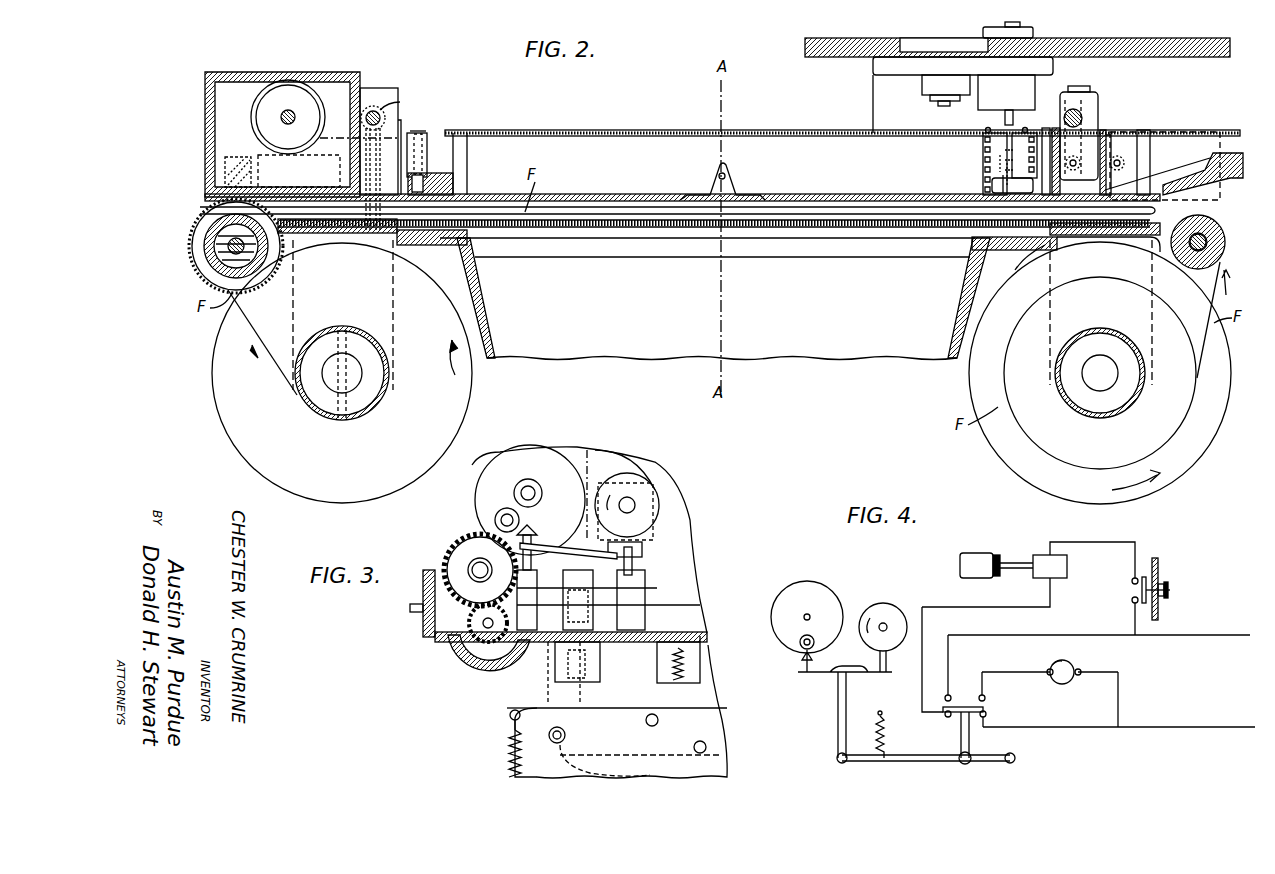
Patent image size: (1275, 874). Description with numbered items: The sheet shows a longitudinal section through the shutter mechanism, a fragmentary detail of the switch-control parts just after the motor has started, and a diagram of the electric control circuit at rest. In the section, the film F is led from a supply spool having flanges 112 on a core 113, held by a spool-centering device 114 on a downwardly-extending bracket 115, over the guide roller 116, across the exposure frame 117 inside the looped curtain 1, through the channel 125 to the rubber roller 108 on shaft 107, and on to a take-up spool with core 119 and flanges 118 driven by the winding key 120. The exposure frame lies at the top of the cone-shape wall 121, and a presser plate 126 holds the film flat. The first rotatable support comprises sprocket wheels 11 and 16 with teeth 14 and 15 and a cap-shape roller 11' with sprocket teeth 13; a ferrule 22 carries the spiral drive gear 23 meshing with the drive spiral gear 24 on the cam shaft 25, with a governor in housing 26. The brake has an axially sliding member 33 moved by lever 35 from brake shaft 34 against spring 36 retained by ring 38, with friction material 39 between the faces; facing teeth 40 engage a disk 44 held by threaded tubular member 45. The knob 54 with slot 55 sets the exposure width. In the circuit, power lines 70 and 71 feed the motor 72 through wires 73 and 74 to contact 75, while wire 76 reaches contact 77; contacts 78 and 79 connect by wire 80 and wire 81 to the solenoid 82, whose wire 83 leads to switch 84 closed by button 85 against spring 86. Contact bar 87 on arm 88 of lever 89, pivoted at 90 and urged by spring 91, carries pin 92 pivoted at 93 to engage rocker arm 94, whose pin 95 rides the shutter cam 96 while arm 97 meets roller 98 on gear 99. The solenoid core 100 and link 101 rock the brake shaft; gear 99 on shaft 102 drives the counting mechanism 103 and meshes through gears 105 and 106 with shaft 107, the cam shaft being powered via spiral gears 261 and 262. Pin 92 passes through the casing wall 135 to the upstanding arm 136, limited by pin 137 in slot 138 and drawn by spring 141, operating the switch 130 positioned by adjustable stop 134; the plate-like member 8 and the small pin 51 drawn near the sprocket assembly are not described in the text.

In FIG. 2, the curtain 1 is at (650, 132).
In FIG. 2, the platen plate 8 is at (425, 142).
In FIG. 2, the sprocket wheel 11 is at (958, 164).
In FIG. 2, the cap-shape roller 11' is at (479, 164).
In FIG. 2, the sprocket teeth 13 is at (420, 131).
In FIG. 2, the teeth 14 is at (1005, 163).
In FIG. 2, the teeth 15 is at (1025, 133).
In FIG. 2, the sprocket wheel 16 is at (1007, 167).
In FIG. 2, the ferrule 22 is at (402, 138).
In FIG. 2, the spiral drive gear 23 is at (362, 122).
In FIG. 2, the drive spiral gear 24 is at (385, 113).
In FIG. 2, the cam shaft 25 is at (373, 110).
In FIG. 3, the cam shaft 25 is at (632, 505).
In FIG. 4, the cam shaft 25 is at (884, 623).
In FIG. 2, the housing 26 is at (358, 143).
In FIG. 2, the axially sliding member 33 is at (1110, 134).
In FIG. 2, the brake shaft 34 is at (1083, 122).
In FIG. 2, the lever 35 is at (1103, 134).
In FIG. 2, the spring 36 is at (1140, 156).
In FIG. 2, the ring 38 is at (1150, 134).
In FIG. 2, the friction material 39 is at (1048, 127).
In FIG. 2, the facing teeth 40 is at (985, 130).
In FIG. 2, the disk 44 is at (1003, 175).
In FIG. 2, the threaded tubular member 45 is at (1000, 156).
In FIG. 2, the pin 51 is at (1023, 130).
In FIG. 2, the knob 54 is at (983, 32).
In FIG. 2, the slot 55 is at (1009, 26).
In FIG. 4, the source of power 70 is at (1217, 635).
In FIG. 4, the source of power 71 is at (1221, 727).
In FIG. 4, the motor 72 is at (1073, 666).
In FIG. 4, the wire 73 is at (1118, 695).
In FIG. 4, the wire 74 is at (1013, 672).
In FIG. 4, the switch contact 75 is at (988, 700).
In FIG. 4, the wire 76 is at (1017, 635).
In FIG. 4, the switch contact 77 is at (950, 695).
In FIG. 4, the switch contact 78 is at (943, 716).
In FIG. 4, the switch contact 79 is at (983, 711).
In FIG. 4, the wire 80 is at (1095, 728).
In FIG. 4, the wire 81 is at (988, 605).
In FIG. 2, the solenoid 82 is at (1216, 154).
In FIG. 4, the solenoid 82 is at (1067, 565).
In FIG. 4, the wire 83 is at (1120, 543).
In FIG. 4, the switch 84 is at (1130, 585).
In FIG. 4, the button 85 is at (1172, 590).
In FIG. 4, the spring 86 is at (1160, 583).
In FIG. 4, the contact bar 87 is at (986, 720).
In FIG. 4, the arm 88 is at (963, 738).
In FIG. 4, the lever 89 is at (905, 762).
In FIG. 4, the pivot 90 is at (1015, 760).
In FIG. 4, the spring 91 is at (876, 730).
In FIG. 3, the pin 92 is at (565, 570).
In FIG. 4, the pin 92 is at (840, 675).
In FIG. 4, the pivot 93 is at (837, 758).
In FIG. 3, the rocker arm 94 is at (591, 550).
In FIG. 4, the rocker arm 94 is at (855, 667).
In FIG. 3, the pin 95 is at (634, 555).
In FIG. 4, the pin 95 is at (886, 663).
In FIG. 3, the shutter cam 96 is at (658, 490).
In FIG. 4, the shutter cam 96 is at (880, 610).
In FIG. 3, the arm 97 is at (536, 536).
In FIG. 4, the arm 97 is at (800, 660).
In FIG. 3, the roller 98 is at (507, 508).
In FIG. 4, the roller 98 is at (800, 640).
In FIG. 3, the gear 99 is at (478, 507).
In FIG. 4, the gear 99 is at (812, 592).
In FIG. 2, the core 100 is at (1125, 135).
In FIG. 2, the link 101 is at (1120, 154).
In FIG. 2, the shaft 102 is at (282, 116).
In FIG. 3, the shaft 102 is at (528, 479).
In FIG. 4, the shaft 102 is at (803, 615).
In FIG. 2, the counting mechanism 103 is at (290, 82).
In FIG. 3, the counting mechanism 103 is at (650, 512).
In FIG. 4, the counting mechanism 103 is at (903, 625).
In FIG. 3, the gear 105 is at (453, 553).
In FIG. 3, the gear 106 is at (473, 642).
In FIG. 2, the shaft 107 is at (206, 250).
In FIG. 3, the shaft 107 is at (483, 653).
In FIG. 2, the rubber roller 108 is at (194, 228).
In FIG. 2, the flanges 112 is at (1008, 450).
In FIG. 2, the core 113 is at (1072, 417).
In FIG. 2, the spool-centering device 114 is at (1083, 373).
In FIG. 2, the bracket 115 is at (1050, 255).
In FIG. 2, the guide roller 116 is at (1208, 233).
In FIG. 2, the exposure frame 117 is at (805, 220).
In FIG. 2, the flanges 118 is at (232, 417).
In FIG. 2, the core 119 is at (333, 332).
In FIG. 2, the winding key 120 is at (347, 333).
In FIG. 2, the cone-shape wall 121 is at (775, 350).
In FIG. 2, the channel 125 is at (1155, 208).
In FIG. 2, the presser plate 126 is at (598, 185).
In FIG. 3, the switch 130 is at (718, 730).
In FIG. 3, the adjustable stop 134 is at (668, 675).
In FIG. 3, the wall 135 is at (703, 634).
In FIG. 3, the upstanding arm 136 is at (563, 680).
In FIG. 3, the pin 137 is at (550, 727).
In FIG. 3, the slot 138 is at (568, 732).
In FIG. 3, the spring 141 is at (508, 753).
In FIG. 2, the spiral gear 261 is at (225, 168).
In FIG. 2, the spiral gear 262 is at (235, 180).